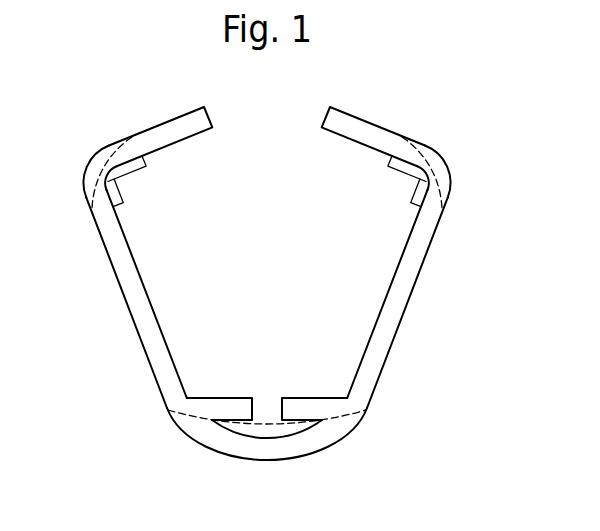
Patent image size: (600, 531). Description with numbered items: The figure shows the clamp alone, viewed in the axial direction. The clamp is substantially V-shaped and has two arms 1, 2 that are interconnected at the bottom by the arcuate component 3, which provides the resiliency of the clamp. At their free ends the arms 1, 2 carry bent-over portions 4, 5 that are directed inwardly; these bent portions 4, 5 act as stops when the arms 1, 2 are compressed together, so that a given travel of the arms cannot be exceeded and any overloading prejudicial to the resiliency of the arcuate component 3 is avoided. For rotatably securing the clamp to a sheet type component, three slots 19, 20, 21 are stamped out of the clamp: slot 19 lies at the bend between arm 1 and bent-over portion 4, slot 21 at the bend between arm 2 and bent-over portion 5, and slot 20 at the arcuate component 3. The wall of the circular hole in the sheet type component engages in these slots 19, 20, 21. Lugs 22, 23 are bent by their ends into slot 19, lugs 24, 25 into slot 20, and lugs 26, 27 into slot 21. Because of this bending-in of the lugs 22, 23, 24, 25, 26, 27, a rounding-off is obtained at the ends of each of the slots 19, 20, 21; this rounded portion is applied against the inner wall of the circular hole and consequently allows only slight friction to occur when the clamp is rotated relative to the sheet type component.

The arm 1 is at (140, 330).
The arm 2 is at (388, 327).
The arcuate component 3 is at (278, 452).
The bent-over portion 4 is at (182, 123).
The bent-over portion 5 is at (355, 125).
The slot 19 is at (107, 173).
The slot 20 is at (263, 422).
The slot 21 is at (428, 175).
The lug 22 is at (143, 163).
The lug 23 is at (123, 193).
The lug 24 is at (243, 402).
The lug 25 is at (293, 402).
The lug 26 is at (410, 193).
The lug 27 is at (395, 168).